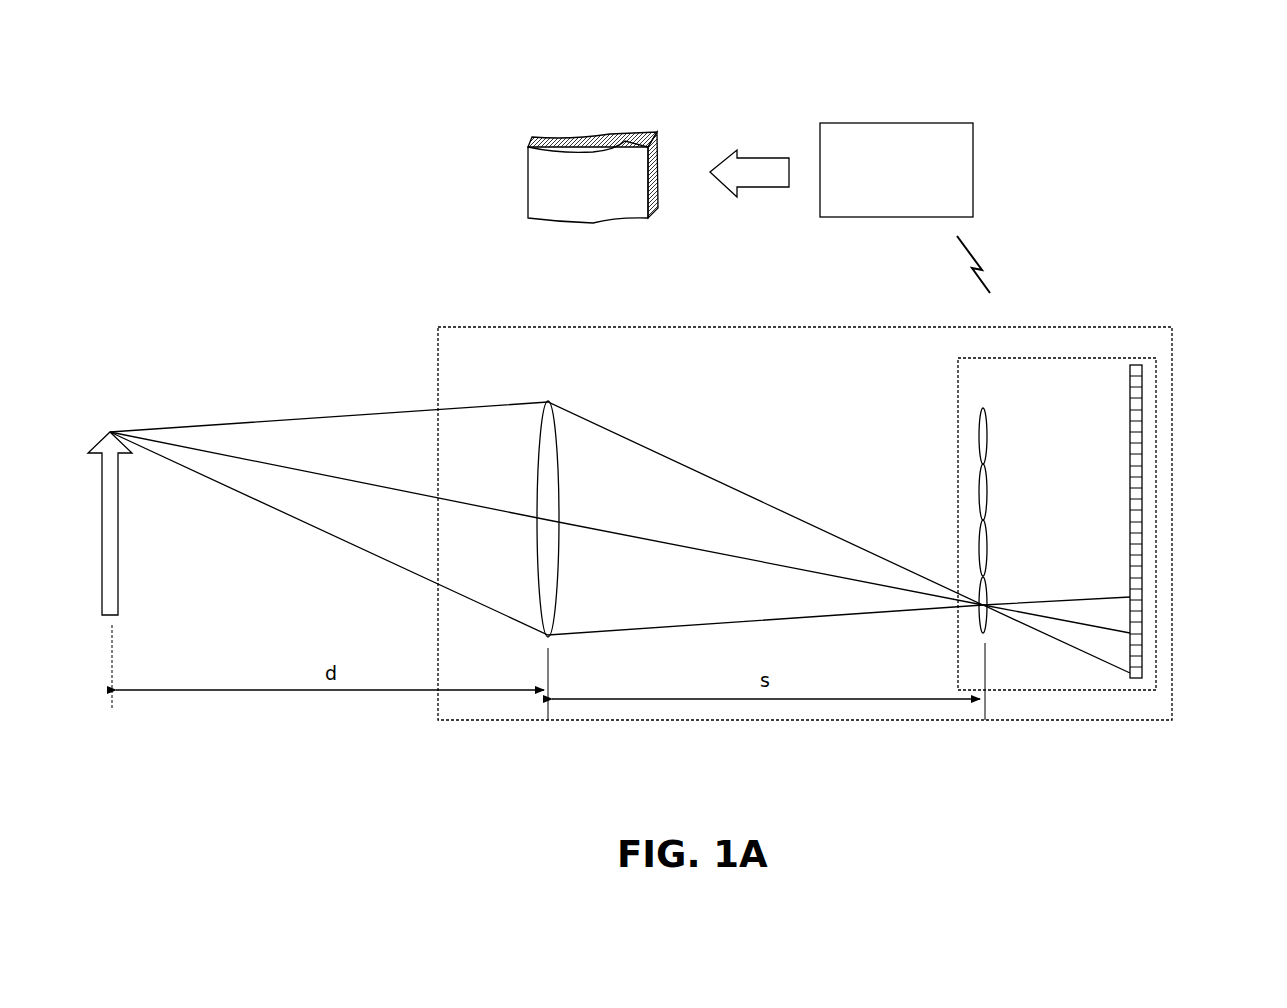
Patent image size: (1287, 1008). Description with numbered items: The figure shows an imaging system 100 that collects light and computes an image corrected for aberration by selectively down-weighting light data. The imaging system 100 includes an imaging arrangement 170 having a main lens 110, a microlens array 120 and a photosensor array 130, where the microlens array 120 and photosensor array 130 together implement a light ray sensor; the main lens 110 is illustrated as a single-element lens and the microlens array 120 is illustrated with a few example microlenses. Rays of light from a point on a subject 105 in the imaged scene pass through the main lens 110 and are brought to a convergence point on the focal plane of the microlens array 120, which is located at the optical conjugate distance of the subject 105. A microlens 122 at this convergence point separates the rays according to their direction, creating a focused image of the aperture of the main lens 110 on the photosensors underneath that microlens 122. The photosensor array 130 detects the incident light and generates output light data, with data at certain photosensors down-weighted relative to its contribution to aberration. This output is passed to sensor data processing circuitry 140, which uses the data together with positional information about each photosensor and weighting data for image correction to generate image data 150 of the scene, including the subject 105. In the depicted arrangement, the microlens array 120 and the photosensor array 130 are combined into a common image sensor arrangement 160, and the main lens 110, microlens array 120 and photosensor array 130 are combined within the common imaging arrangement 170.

The imaging system 100 is at (236, 81).
The subject 105 is at (126, 396).
The main lens 110 is at (552, 403).
The microlens array 120 is at (1005, 432).
The microlens 122 is at (987, 631).
The photosensor array 130 is at (1148, 377).
The sensor data processing circuitry 140 is at (928, 123).
The image data 150 is at (652, 133).
The image sensor arrangement 160 is at (1112, 358).
The imaging arrangement 170 is at (845, 327).